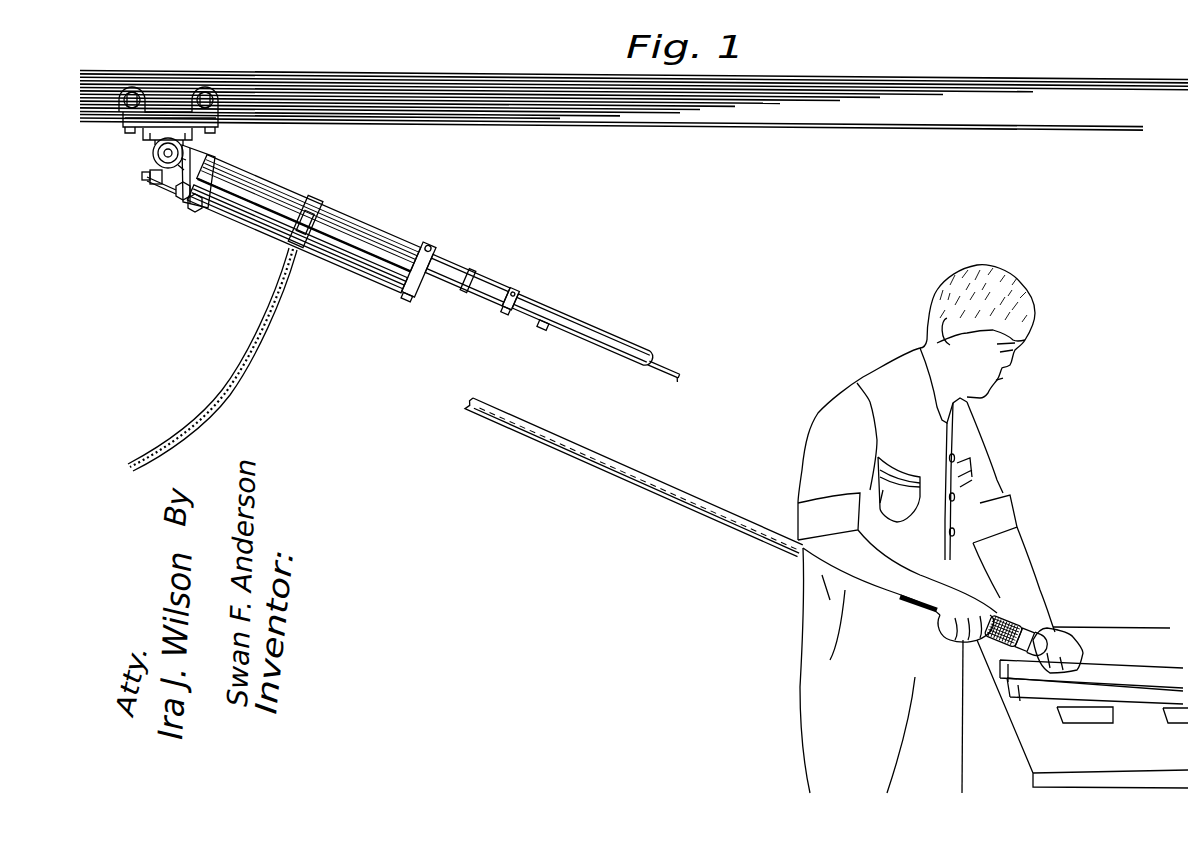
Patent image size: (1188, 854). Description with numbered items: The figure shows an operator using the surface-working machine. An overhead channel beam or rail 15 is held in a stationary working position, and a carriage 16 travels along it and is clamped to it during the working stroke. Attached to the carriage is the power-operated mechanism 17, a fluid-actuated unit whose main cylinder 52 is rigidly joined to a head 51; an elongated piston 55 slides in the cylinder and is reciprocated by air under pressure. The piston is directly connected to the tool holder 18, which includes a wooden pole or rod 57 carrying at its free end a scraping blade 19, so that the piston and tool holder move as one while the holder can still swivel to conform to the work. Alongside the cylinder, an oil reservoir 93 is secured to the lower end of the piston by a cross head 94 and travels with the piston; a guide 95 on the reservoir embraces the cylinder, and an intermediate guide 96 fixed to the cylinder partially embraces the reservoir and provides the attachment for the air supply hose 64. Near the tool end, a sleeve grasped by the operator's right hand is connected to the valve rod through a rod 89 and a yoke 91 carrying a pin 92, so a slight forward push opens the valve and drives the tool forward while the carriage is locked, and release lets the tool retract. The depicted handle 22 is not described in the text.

The overhead channel beam or rail 15 is at (505, 63).
The carriage 16 is at (165, 111).
The power-operated mechanism 17 is at (258, 185).
The tool holder 18 is at (668, 336).
The scraping blade 19 is at (1135, 651).
The handle 22 is at (1003, 620).
The head 51 is at (582, 334).
The main cylinder 52 is at (375, 228).
The piston 55 is at (453, 267).
The pole or rod 57 is at (613, 461).
The air supply hose 64 is at (283, 280).
The rod 89 is at (675, 377).
The yoke 91 is at (512, 305).
The pin 92 is at (518, 296).
The oil reservoir 93 is at (377, 278).
The cross head 94 is at (408, 298).
The guide 95 is at (188, 208).
The intermediate guide 96 is at (313, 201).